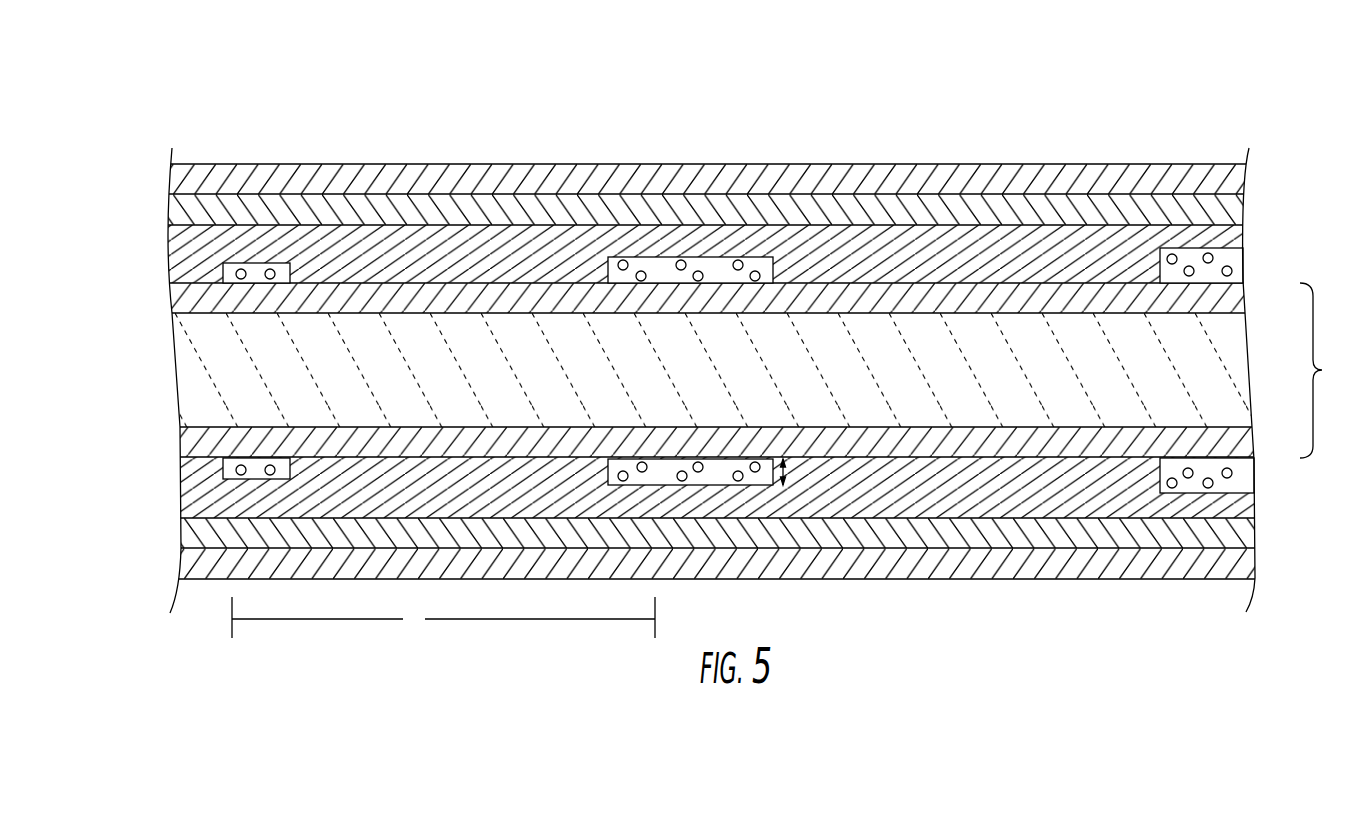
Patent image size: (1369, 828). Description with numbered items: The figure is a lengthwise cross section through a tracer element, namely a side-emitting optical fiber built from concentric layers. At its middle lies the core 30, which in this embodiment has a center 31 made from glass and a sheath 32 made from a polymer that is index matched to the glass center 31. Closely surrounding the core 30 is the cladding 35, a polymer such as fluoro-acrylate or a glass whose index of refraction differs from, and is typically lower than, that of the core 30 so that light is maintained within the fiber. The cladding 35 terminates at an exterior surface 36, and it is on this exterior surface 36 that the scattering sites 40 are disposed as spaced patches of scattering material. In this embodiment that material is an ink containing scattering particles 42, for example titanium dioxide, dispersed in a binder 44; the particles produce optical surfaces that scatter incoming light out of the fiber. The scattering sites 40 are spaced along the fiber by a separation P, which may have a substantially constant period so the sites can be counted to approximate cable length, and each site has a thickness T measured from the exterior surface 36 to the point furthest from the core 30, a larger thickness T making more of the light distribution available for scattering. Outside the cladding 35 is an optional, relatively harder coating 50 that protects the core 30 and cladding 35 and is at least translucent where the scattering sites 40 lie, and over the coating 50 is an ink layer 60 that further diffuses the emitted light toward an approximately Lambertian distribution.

The core 30 is at (1325, 370).
The center 31 is at (319, 353).
The sheath 32 is at (190, 441).
The cladding 35 is at (877, 247).
The exterior surface 36 is at (400, 283).
The scattering sites 40 is at (255, 248).
The scattering particles 42 is at (680, 263).
The binder 44 is at (747, 263).
The coating 50 is at (1047, 208).
The ink layer 60 is at (982, 173).
The thickness T is at (787, 470).
The separation P is at (443, 617).